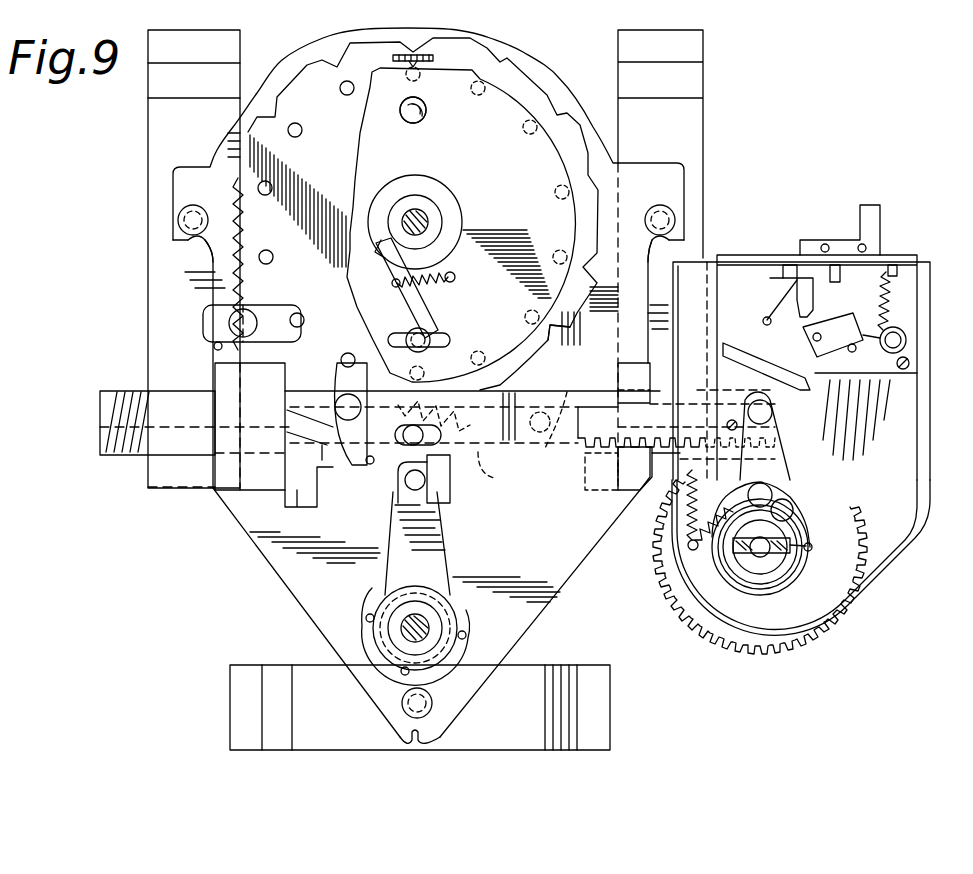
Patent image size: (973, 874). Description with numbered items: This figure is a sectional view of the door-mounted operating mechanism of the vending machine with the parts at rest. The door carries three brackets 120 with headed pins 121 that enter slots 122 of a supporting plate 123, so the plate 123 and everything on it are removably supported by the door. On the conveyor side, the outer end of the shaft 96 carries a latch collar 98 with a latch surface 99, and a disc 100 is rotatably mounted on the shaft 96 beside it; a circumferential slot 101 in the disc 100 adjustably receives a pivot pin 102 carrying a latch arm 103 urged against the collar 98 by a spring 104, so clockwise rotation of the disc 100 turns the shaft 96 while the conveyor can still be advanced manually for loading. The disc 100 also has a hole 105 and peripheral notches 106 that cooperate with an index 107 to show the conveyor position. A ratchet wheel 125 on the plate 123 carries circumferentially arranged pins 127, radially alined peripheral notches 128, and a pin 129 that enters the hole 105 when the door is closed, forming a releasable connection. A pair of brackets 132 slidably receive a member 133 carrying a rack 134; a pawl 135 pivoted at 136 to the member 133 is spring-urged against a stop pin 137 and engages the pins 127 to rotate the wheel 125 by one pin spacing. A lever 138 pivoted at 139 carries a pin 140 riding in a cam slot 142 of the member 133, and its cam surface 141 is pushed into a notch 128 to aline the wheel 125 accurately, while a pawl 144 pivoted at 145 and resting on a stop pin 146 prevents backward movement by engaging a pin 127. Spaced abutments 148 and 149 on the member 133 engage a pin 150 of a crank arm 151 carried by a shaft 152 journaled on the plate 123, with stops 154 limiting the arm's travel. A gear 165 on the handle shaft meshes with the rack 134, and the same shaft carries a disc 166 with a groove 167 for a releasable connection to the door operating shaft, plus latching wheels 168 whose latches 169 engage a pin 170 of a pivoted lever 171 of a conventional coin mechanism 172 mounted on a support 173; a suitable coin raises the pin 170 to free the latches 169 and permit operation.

The shaft 96 is at (432, 218).
The latch collar 98 is at (430, 180).
The latch surface 99 is at (385, 260).
The disc 100 is at (352, 183).
The circumferential slot 101 is at (440, 340).
The pivot pin 102 is at (420, 350).
The latch arm 103 is at (410, 300).
The spring 104 is at (440, 285).
The hole 105 is at (405, 118).
The notches 106 is at (480, 86).
The index 107 is at (400, 57).
The brackets 120 is at (165, 123).
The headed pins 121 is at (178, 220).
The slots 122 is at (200, 248).
The supporting plate 123 is at (510, 52).
The ratchet wheel 125 is at (303, 88).
The pins 127 is at (318, 117).
The peripheral notches 128 is at (562, 95).
The pin 129 is at (420, 120).
The brackets 132 is at (220, 373).
The member 133 is at (520, 452).
The rack 134 is at (600, 455).
The pawl 135 is at (341, 364).
The pivot 136 is at (335, 407).
The stop pin 137 is at (372, 466).
The lever 138 is at (480, 460).
The pivot 139 is at (560, 395).
The pin 140 is at (403, 437).
The cam surface 141 is at (369, 414).
The cam slot 142 is at (322, 448).
The pawl 144 is at (272, 315).
The pivot 145 is at (229, 322).
The stop pin 146 is at (213, 348).
The abutment 148 is at (300, 508).
The abutment 149 is at (451, 500).
The pin 150 is at (405, 484).
The crank arm 151 is at (390, 548).
The shaft 152 is at (417, 625).
The stops 154 is at (385, 600).
The gear 165 is at (822, 628).
The disc 166 is at (752, 570).
The groove 167 is at (780, 553).
The latching wheels 168 is at (811, 547).
The latches 169 is at (774, 494).
The pin 170 is at (794, 511).
The pivoted lever 171 is at (765, 482).
The coin mechanism 172 is at (905, 262).
The support 173 is at (907, 515).